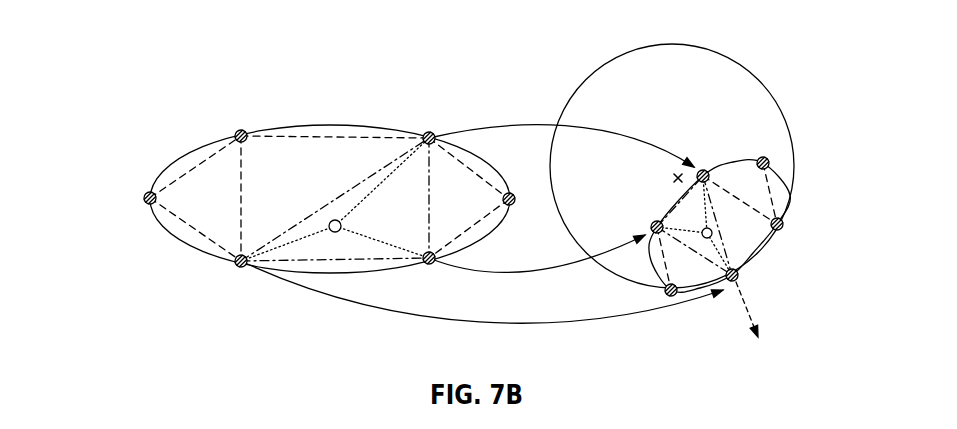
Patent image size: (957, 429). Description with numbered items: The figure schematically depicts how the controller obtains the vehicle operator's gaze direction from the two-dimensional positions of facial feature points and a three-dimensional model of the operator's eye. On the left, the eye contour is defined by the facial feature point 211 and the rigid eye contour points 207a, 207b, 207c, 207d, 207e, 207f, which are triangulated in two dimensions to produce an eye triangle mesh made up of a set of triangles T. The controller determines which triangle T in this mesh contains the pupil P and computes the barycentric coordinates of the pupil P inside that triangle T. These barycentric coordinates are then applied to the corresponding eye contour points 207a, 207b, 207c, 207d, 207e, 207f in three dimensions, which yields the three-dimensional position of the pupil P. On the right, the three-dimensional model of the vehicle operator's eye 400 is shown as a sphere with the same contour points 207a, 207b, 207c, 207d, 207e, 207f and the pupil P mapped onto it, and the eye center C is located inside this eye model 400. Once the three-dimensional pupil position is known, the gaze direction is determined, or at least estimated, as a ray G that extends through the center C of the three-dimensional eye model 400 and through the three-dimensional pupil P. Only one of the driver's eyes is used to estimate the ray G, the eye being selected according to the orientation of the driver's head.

The 3D model of the vehicle operator's eyes 400 is at (580, 44).
The facial feature point 207a is at (145, 200).
The facial feature point 207b is at (241, 130).
The facial feature point 207c is at (430, 132).
The facial feature point 207d is at (511, 206).
The facial feature point 207e is at (429, 265).
The facial feature point 207f is at (237, 265).
The facial feature point 211 is at (333, 220).
The pupil P is at (341, 223).
The triangle T is at (186, 156).
The eye center C is at (676, 177).
The ray G is at (745, 305).